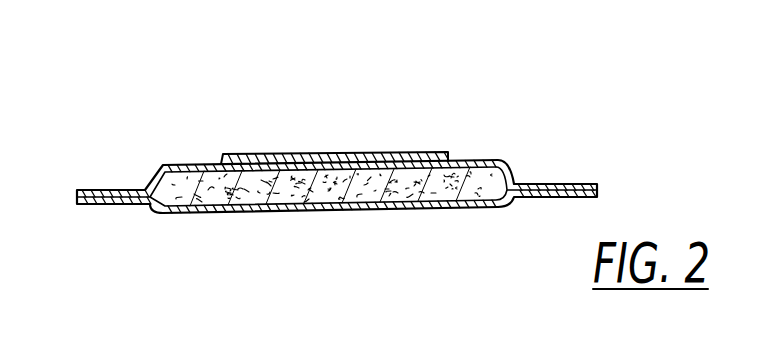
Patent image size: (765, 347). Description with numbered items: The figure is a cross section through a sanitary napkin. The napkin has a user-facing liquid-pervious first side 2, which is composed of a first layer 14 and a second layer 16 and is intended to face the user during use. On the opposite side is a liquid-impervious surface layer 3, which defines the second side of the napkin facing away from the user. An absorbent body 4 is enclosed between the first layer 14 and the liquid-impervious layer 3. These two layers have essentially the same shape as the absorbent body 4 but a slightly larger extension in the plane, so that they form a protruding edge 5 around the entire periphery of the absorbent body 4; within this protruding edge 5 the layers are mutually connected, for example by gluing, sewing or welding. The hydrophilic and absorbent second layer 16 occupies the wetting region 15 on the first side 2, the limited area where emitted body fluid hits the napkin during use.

The liquid-pervious first side 2 is at (503, 151).
The liquid-impervious surface layer 3 is at (492, 212).
The absorbent body 4 is at (283, 210).
The protruding edge 5 is at (96, 188).
The first layer 14 is at (470, 158).
The wetting region 15 is at (334, 116).
The second layer 16 is at (362, 155).